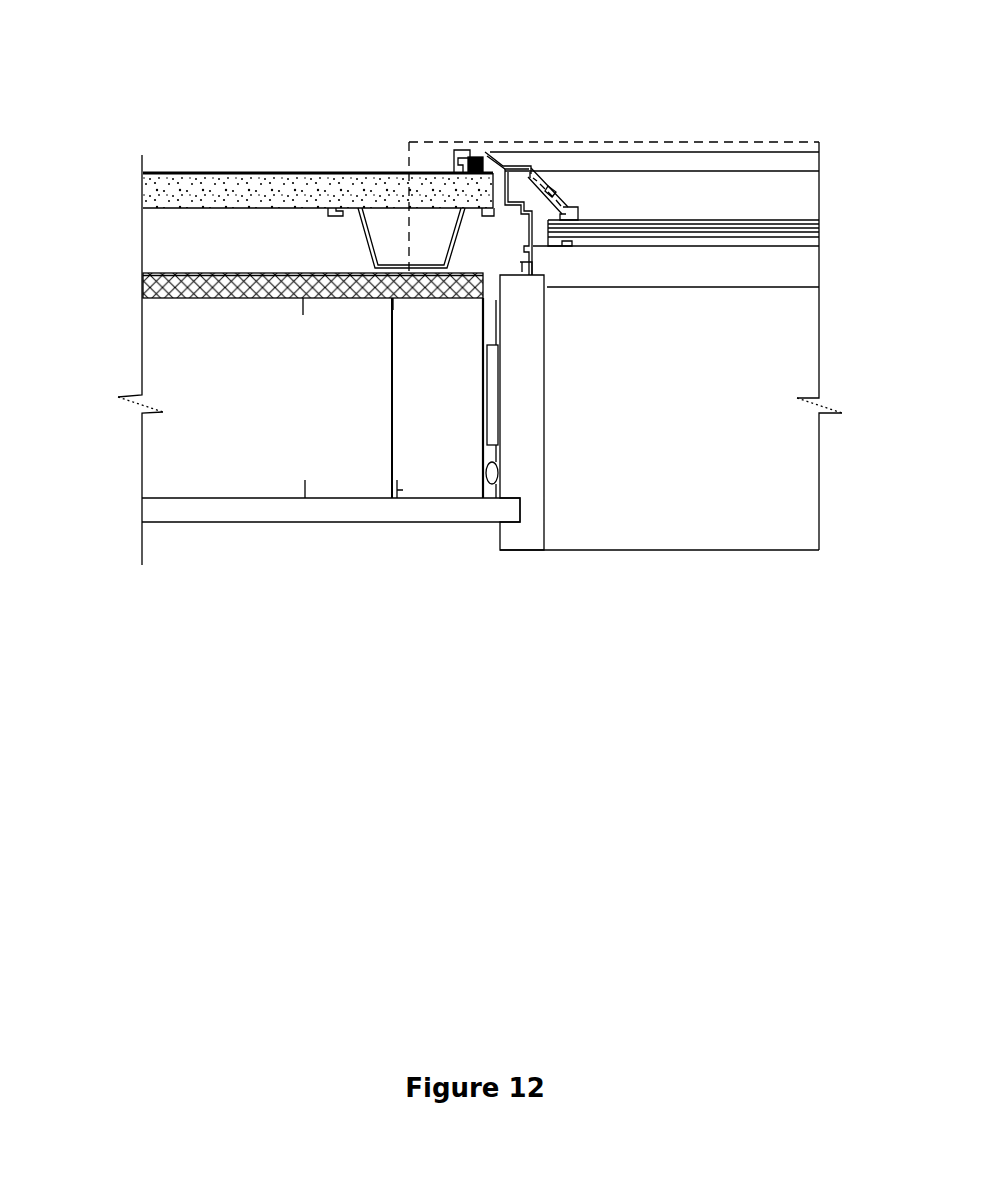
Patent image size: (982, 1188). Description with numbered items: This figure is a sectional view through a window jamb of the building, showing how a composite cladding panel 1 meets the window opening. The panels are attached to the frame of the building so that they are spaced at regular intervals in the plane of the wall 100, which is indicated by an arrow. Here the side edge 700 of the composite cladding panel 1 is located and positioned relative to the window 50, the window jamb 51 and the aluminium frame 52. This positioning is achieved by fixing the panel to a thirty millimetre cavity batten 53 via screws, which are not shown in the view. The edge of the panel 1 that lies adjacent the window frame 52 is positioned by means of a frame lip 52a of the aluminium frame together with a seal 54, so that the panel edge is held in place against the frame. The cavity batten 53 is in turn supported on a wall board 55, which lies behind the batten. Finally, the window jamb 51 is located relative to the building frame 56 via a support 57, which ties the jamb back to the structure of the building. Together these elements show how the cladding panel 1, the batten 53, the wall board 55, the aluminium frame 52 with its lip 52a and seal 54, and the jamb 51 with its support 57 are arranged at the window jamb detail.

The composite cladding panel 1 is at (390, 150).
The window 50 is at (807, 227).
The window jamb 51 is at (519, 555).
The aluminium frame 52 is at (490, 207).
The frame lip 52a is at (475, 150).
The cavity batten 53 is at (452, 243).
The seal 54 is at (483, 158).
The wall board 55 is at (143, 290).
The building frame 56 is at (258, 348).
The support 57 is at (335, 510).
The plane of the wall 100 is at (425, 468).
The side edge 700 is at (530, 177).